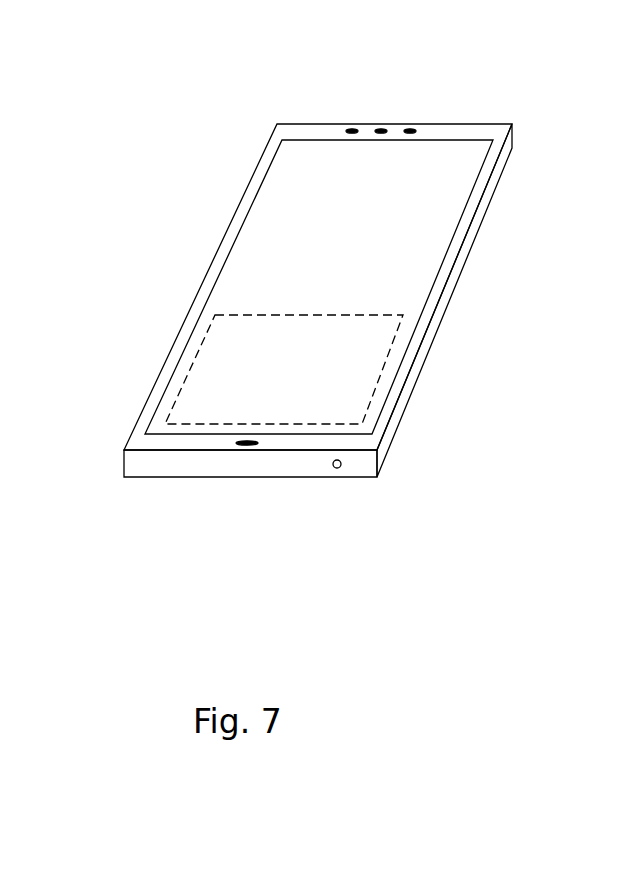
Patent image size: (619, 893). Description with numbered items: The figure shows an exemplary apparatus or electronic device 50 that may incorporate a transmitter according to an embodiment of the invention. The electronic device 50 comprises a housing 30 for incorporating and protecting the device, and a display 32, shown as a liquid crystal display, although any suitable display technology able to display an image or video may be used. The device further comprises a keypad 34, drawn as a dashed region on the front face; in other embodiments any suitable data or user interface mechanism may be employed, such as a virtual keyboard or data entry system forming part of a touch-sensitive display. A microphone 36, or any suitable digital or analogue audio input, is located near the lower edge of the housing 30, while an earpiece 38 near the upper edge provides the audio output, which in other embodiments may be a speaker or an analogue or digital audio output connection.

The electronic device 50 is at (362, 289).
The housing 30 is at (292, 124).
The display 32 is at (432, 228).
The keypad 34 is at (367, 385).
The microphone 36 is at (250, 447).
The earpiece 38 is at (381, 128).